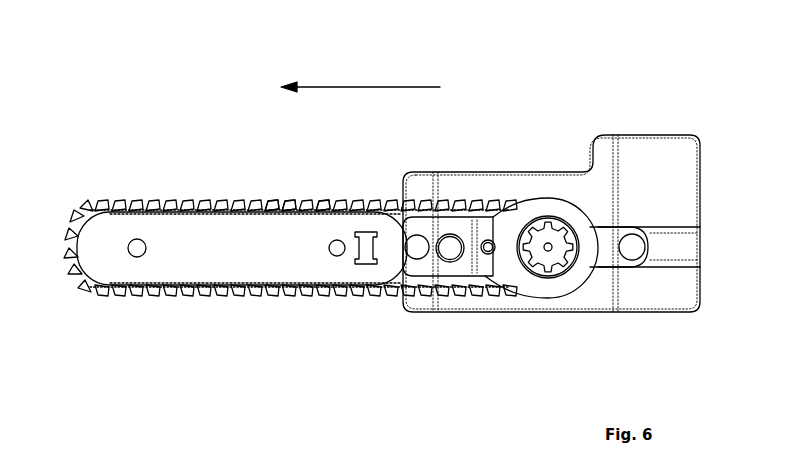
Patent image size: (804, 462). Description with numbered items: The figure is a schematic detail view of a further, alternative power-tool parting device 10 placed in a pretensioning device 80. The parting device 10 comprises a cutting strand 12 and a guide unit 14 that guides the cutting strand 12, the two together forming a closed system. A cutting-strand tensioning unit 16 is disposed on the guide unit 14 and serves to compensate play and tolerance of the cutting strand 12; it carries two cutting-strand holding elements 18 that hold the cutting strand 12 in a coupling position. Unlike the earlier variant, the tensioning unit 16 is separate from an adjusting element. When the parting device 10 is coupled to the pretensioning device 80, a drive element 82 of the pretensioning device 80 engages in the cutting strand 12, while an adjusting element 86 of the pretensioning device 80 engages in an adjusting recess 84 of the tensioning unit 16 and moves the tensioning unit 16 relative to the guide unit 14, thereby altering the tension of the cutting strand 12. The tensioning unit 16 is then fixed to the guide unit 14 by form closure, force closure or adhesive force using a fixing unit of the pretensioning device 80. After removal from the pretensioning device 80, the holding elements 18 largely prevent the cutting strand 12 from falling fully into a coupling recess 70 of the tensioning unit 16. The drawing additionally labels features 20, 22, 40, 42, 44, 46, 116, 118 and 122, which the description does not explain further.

The power-tool parting device 10 is at (578, 96).
The cutting strand 12 is at (120, 201).
The guide unit 14 is at (188, 219).
The cutting-strand tensioning unit 16 is at (510, 366).
The cutting-strand holding element 18 is at (598, 270).
The bar mounting hole 20 is at (413, 245).
The guide hole 22 is at (488, 255).
The direction of movement 40 is at (370, 86).
The housing edge 42 is at (680, 318).
The bar receiving region 44 is at (497, 228).
The bar body 46 is at (241, 271).
The coupling recess 70 is at (544, 278).
The pretensioning device 80 is at (553, 183).
The drive element 82 is at (567, 288).
The adjusting recess 84 is at (458, 260).
The adjusting element 86 is at (450, 258).
The chain link 116 is at (318, 200).
The cutting link 118 is at (286, 196).
The connecting link 122 is at (272, 200).